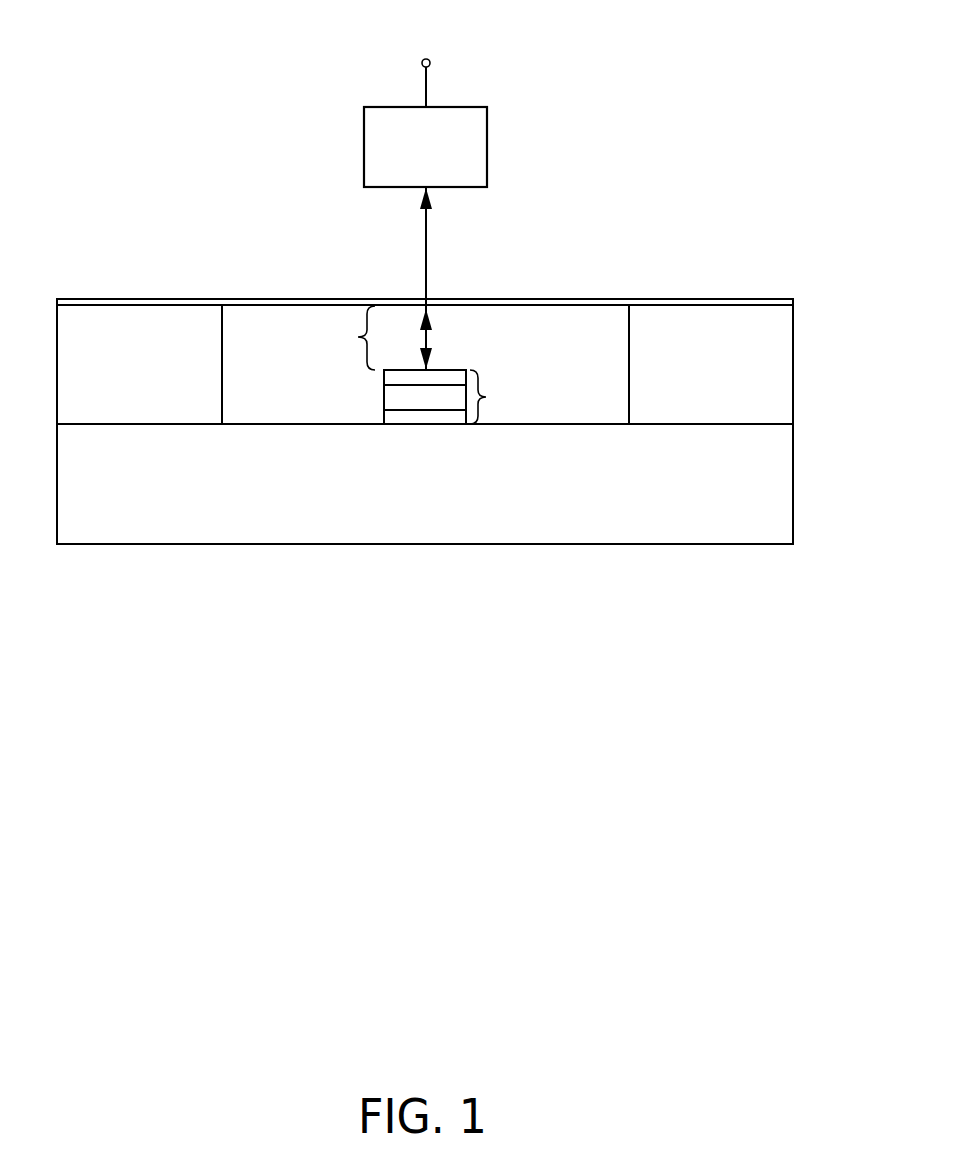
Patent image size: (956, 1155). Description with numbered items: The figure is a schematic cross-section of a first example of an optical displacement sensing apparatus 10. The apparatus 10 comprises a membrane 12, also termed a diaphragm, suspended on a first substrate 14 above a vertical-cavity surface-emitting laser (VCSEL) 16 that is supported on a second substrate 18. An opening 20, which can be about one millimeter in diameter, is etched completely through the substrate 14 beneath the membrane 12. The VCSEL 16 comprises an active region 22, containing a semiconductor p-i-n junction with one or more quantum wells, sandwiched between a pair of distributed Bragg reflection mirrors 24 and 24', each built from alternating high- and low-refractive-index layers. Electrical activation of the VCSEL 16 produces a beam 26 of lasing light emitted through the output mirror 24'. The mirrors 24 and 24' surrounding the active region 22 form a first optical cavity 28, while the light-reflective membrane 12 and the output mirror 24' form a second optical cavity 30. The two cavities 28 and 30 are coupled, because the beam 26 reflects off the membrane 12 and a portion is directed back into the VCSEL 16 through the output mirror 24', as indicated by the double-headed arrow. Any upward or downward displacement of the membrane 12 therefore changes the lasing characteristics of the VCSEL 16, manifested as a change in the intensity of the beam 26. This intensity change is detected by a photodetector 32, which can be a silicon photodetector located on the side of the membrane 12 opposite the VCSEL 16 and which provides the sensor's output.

The optical displacement sensing apparatus 10 is at (754, 582).
The membrane 12 is at (303, 299).
The first substrate 14 is at (150, 381).
The vertical-cavity surface-emitting laser (VCSEL) 16 is at (460, 365).
The second substrate 18 is at (150, 501).
The opening 20 is at (224, 341).
The active region 22 is at (383, 399).
The distributed Bragg reflection (DBR) mirror 24 is at (425, 439).
The output mirror 24' is at (393, 373).
The beam of lasing light 26 is at (421, 338).
The first optical cavity 28 is at (498, 397).
The second optical cavity 30 is at (347, 338).
The photodetector 32 is at (440, 159).